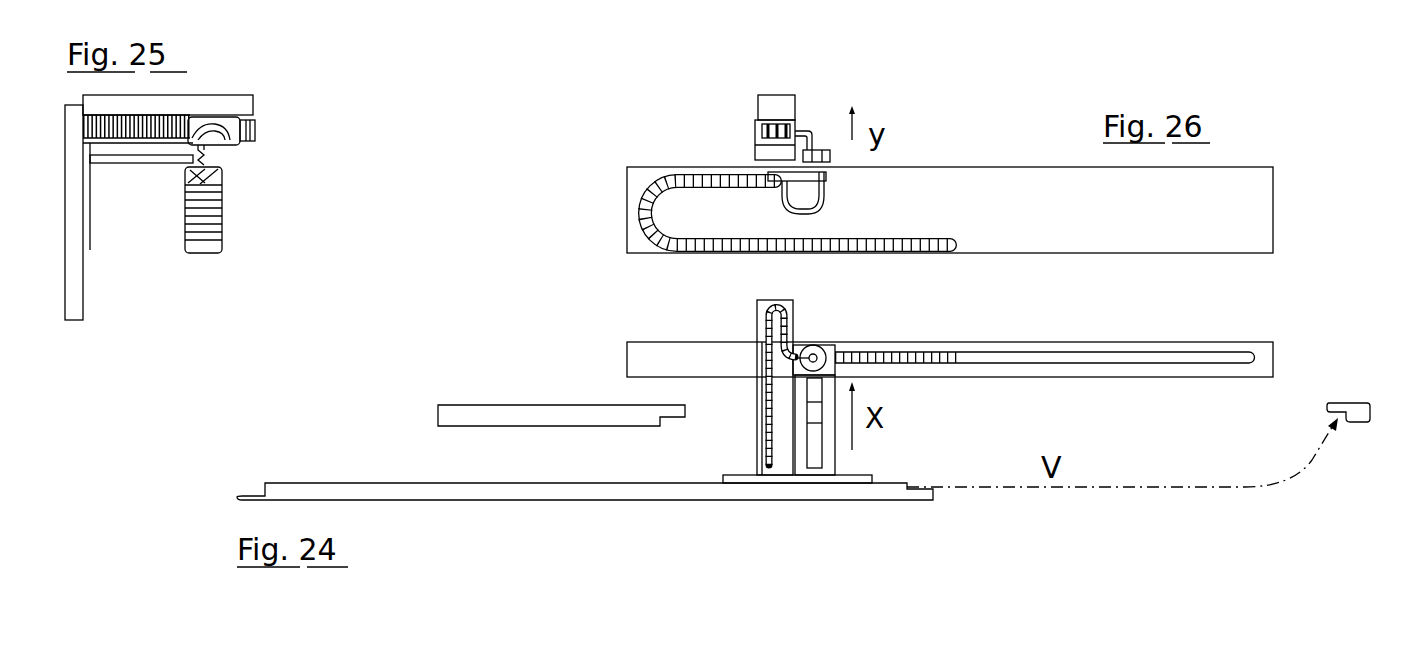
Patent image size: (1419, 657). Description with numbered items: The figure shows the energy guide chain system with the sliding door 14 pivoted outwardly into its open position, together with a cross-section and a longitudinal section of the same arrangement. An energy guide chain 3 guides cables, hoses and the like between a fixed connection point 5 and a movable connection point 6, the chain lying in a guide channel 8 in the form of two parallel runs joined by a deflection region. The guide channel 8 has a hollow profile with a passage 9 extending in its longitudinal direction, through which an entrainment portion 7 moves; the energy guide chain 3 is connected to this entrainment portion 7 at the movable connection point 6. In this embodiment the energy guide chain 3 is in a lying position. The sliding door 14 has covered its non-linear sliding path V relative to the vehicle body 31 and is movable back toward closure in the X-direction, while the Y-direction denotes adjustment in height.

In FIG. 25, the energy guide chain 3 is at (160, 130).
In FIG. 26, the energy guide chain 3 is at (900, 250).
In FIG. 24, the energy guide chain 3 is at (892, 357).
In FIG. 26, the fixed connection point 5 is at (955, 252).
In FIG. 24, the fixed connection point 5 is at (777, 467).
In FIG. 26, the movable connection point 6 is at (774, 187).
In FIG. 24, the movable connection point 6 is at (789, 338).
In FIG. 26, the entrainment portion 7 is at (814, 110).
In FIG. 25, the guide channel 8 is at (188, 253).
In FIG. 24, the passage 9 is at (1115, 358).
In FIG. 25, the sliding door 14 is at (73, 300).
In FIG. 24, the sliding door 14 is at (517, 495).
In FIG. 24, the vehicle body 31 is at (446, 410).